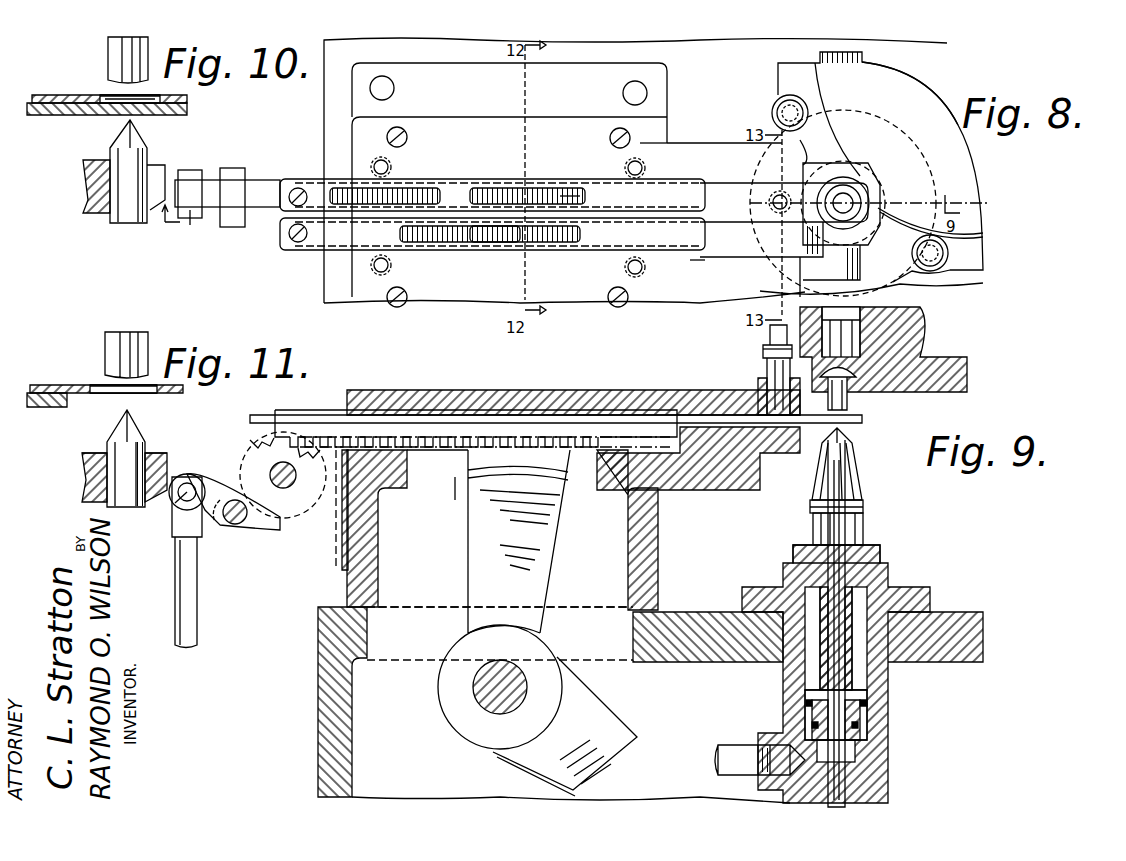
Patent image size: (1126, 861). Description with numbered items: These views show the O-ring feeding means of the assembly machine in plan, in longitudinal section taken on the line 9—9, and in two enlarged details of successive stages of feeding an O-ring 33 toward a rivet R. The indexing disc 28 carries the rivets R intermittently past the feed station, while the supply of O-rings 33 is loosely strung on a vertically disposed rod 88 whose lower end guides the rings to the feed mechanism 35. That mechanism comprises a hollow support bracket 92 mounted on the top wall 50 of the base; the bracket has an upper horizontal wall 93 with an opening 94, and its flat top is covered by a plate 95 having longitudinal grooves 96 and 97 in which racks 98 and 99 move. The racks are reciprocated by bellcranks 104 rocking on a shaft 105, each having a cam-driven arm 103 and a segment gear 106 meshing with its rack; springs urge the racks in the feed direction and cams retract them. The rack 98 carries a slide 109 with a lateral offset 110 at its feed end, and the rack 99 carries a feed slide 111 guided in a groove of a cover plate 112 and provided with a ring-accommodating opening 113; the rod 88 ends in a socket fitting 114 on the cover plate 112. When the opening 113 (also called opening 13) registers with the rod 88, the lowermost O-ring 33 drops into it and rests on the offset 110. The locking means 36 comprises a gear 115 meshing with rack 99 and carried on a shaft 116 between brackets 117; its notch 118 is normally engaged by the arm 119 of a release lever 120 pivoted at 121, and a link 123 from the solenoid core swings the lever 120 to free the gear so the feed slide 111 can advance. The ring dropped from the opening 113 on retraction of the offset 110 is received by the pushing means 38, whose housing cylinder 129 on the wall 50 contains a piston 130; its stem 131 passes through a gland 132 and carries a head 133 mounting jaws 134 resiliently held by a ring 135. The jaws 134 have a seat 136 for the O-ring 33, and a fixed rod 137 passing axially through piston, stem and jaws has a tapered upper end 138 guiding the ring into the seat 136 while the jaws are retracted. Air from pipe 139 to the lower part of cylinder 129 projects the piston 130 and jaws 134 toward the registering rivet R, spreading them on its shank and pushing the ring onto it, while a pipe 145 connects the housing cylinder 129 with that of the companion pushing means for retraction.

In FIG. 8, the section line 9— 9 is at (169, 223).
In FIG. 8, the opening 13 is at (800, 133).
In FIG. 8, the indexing disc 28 is at (765, 78).
In FIG. 9, the indexing disc 28 is at (945, 365).
In FIG. 8, the O-rings 33 is at (855, 200).
In FIG. 10, the O-rings 33 is at (112, 103).
In FIG. 11, the O-rings 33 is at (150, 455).
In FIG. 9, the O-rings 33 is at (762, 355).
In FIG. 8, the feed mechanism 35 is at (680, 88).
In FIG. 9, the feed mechanism 35 is at (400, 386).
In FIG. 9, the locking means 36 is at (240, 456).
In FIG. 9, the O-ring pushing means 38 is at (902, 696).
In FIG. 8, the top wall 50 is at (680, 50).
In FIG. 9, the top wall 50 is at (692, 614).
In FIG. 9, the rod 88 is at (762, 333).
In FIG. 8, the support bracket 92 is at (443, 66).
In FIG. 9, the support bracket 92 is at (658, 540).
In FIG. 9, the upper horizontal wall 93 is at (608, 480).
In FIG. 9, the opening 94 is at (455, 480).
In FIG. 8, the plate 95 is at (650, 130).
In FIG. 9, the plate 95 is at (717, 460).
In FIG. 8, the longitudinal groove 96 is at (522, 250).
In FIG. 9, the longitudinal groove 96 is at (692, 392).
In FIG. 8, the longitudinal groove 97 is at (428, 192).
In FIG. 8, the rack 98 is at (452, 250).
In FIG. 9, the rack 98 is at (470, 425).
In FIG. 8, the rack 99 is at (460, 192).
In FIG. 9, the bellcrank arm 103 is at (615, 725).
In FIG. 9, the bellcrank 104 is at (452, 710).
In FIG. 9, the shaft 105 is at (520, 668).
In FIG. 9, the segment gear 106 is at (512, 456).
In FIG. 8, the slide 109 is at (703, 254).
In FIG. 9, the slide 109 is at (437, 422).
In FIG. 8, the lateral offset 110 is at (710, 183).
In FIG. 10, the lateral offset 110 is at (32, 116).
In FIG. 11, the lateral offset 110 is at (30, 408).
In FIG. 9, the lateral offset 110 is at (855, 422).
In FIG. 8, the feed slide 111 is at (552, 196).
In FIG. 10, the feed slide 111 is at (78, 95).
In FIG. 11, the feed slide 111 is at (75, 385).
In FIG. 9, the feed slide 111 is at (648, 392).
In FIG. 9, the cover plate 112 is at (548, 448).
In FIG. 8, the ring-accommodating opening 113 is at (846, 198).
In FIG. 10, the ring-accommodating opening 113 is at (180, 100).
In FIG. 11, the ring-accommodating opening 113 is at (150, 398).
In FIG. 9, the ring-accommodating opening 113 is at (556, 419).
In FIG. 9, the socket fitting 114 is at (757, 388).
In FIG. 8, the gear 115 is at (265, 205).
In FIG. 9, the gear 115 is at (292, 505).
In FIG. 9, the shaft 116 is at (276, 488).
In FIG. 8, the brackets 117 is at (275, 178).
In FIG. 9, the brackets 117 is at (330, 540).
In FIG. 9, the notch 118 is at (262, 445).
In FIG. 9, the lever arm 119 is at (250, 535).
In FIG. 8, the release lever 120 is at (200, 192).
In FIG. 9, the release lever 120 is at (222, 487).
In FIG. 9, the pivot 121 is at (228, 528).
In FIG. 8, the link 123 is at (206, 225).
In FIG. 9, the link 123 is at (195, 630).
In FIG. 8, the housing cylinder 129 is at (915, 268).
In FIG. 9, the housing cylinder 129 is at (886, 710).
In FIG. 9, the piston 130 is at (808, 712).
In FIG. 9, the stem 131 is at (822, 670).
In FIG. 9, the gland 132 is at (876, 546).
In FIG. 9, the head 133 is at (813, 530).
In FIG. 10, the jaws 134 is at (92, 210).
In FIG. 11, the jaws 134 is at (82, 483).
In FIG. 9, the jaws 134 is at (816, 485).
In FIG. 9, the ring 135 is at (865, 508).
In FIG. 10, the seat 136 is at (88, 180).
In FIG. 11, the seat 136 is at (86, 453).
In FIG. 10, the fixed rod 137 is at (120, 220).
In FIG. 11, the fixed rod 137 is at (118, 505).
In FIG. 9, the fixed rod 137 is at (846, 606).
In FIG. 10, the tapered upper end 138 is at (146, 137).
In FIG. 11, the tapered upper end 138 is at (120, 438).
In FIG. 9, the tapered upper end 138 is at (850, 440).
In FIG. 9, the pipe 139 is at (722, 745).
In FIG. 8, the pipe 145 is at (880, 62).
In FIG. 8, the rivets R is at (930, 272).
In FIG. 10, the rivets R is at (115, 52).
In FIG. 11, the rivets R is at (112, 345).
In FIG. 9, the rivets R is at (852, 395).